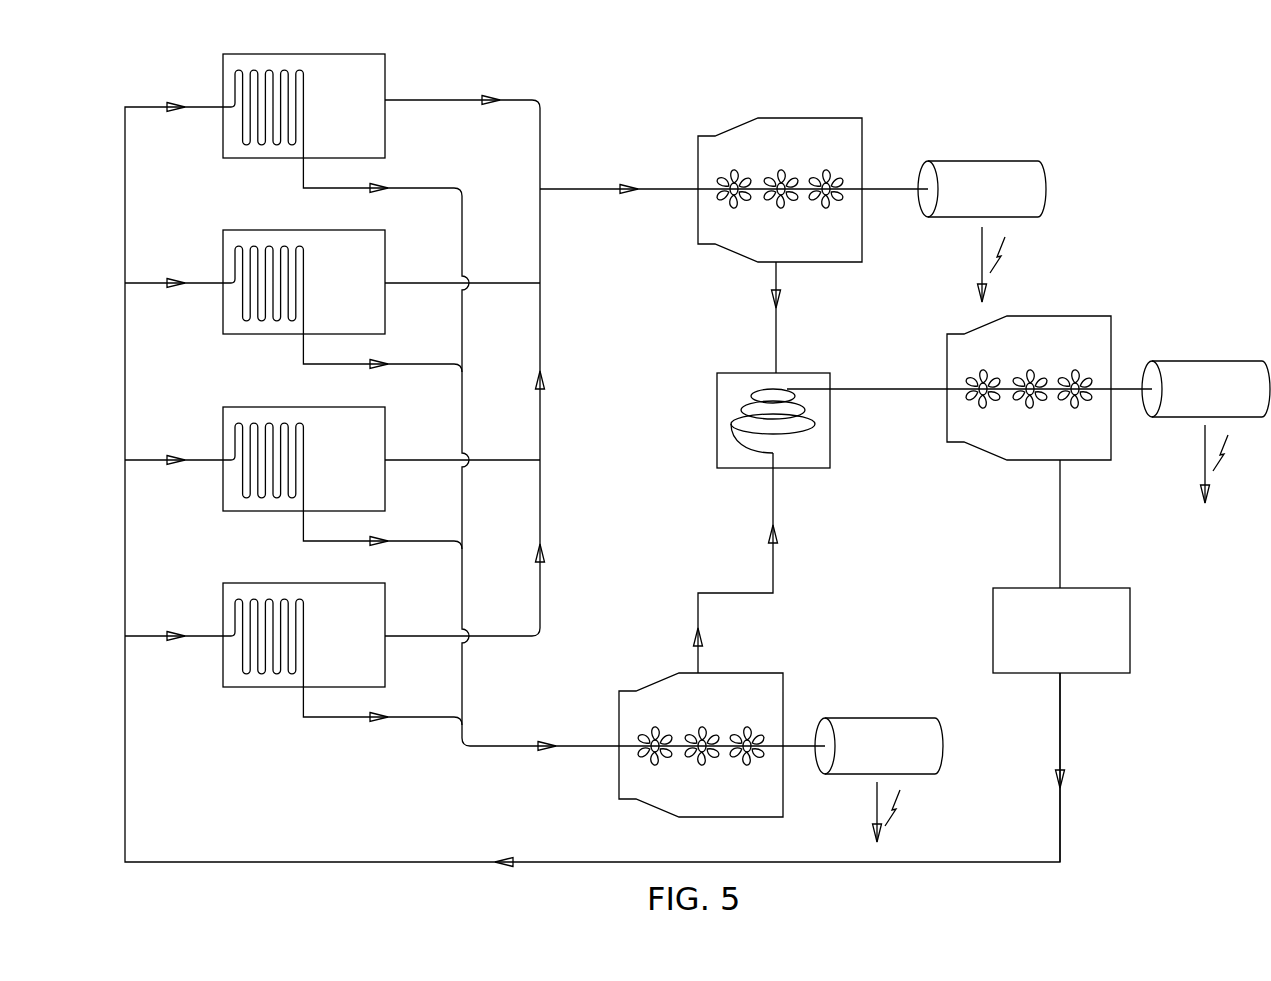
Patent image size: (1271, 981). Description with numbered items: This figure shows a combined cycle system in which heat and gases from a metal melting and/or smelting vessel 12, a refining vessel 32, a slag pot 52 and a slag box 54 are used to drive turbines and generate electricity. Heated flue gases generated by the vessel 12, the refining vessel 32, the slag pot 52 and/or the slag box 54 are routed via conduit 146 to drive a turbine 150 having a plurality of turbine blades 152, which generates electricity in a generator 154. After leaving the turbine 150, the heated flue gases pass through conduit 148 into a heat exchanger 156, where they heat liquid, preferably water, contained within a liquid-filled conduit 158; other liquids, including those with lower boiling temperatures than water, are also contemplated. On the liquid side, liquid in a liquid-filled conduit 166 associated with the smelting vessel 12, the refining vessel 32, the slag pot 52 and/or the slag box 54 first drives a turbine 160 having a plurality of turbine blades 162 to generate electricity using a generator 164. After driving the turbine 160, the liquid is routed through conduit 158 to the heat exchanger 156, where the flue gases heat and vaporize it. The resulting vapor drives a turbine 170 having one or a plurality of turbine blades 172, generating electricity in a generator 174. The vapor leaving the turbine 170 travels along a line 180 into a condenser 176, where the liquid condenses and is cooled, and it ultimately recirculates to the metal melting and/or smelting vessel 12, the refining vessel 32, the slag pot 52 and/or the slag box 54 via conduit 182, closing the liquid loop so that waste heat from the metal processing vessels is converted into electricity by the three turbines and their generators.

The metal melting and/or smelting vessel 12 is at (354, 122).
The refining vessel 32 is at (354, 298).
The slag pot 52 is at (354, 475).
The slag box 54 is at (354, 651).
The conduit 146 is at (442, 100).
The conduit 148 is at (773, 348).
The turbine 150 is at (850, 118).
The turbine blades 152 is at (781, 158).
The generator 154 is at (1000, 160).
The heat exchanger 156 is at (716, 391).
The liquid-filled conduit 158 is at (772, 510).
The turbine 160 is at (770, 673).
The turbine blades 162 is at (702, 717).
The generator 164 is at (895, 718).
The liquid-filled conduit 166 is at (463, 224).
The turbine 170 is at (1098, 316).
The turbine blades 172 is at (1030, 358).
The generator 174 is at (1223, 358).
The condenser 176 is at (1102, 587).
The condenser inlet line 180 is at (1058, 525).
The conduit 182 is at (1058, 722).